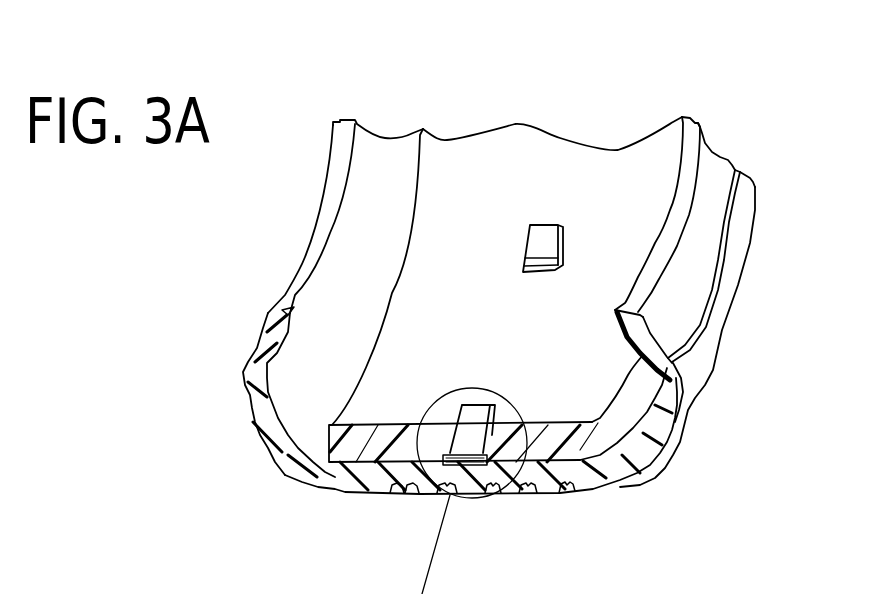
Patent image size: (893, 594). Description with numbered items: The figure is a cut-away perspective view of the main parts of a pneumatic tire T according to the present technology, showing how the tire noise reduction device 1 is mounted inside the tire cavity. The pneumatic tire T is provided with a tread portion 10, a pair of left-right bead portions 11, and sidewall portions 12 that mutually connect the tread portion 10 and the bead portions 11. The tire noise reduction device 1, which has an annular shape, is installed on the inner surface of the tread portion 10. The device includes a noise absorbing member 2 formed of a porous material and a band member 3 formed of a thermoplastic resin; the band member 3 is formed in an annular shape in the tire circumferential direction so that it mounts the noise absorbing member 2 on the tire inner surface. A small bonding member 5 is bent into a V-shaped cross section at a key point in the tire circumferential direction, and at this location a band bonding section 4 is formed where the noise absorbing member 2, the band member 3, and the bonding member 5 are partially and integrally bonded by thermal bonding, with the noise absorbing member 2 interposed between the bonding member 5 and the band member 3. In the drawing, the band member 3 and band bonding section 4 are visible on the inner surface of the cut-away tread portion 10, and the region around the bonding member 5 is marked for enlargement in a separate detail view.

The pneumatic tire T is at (417, 117).
The tire noise reduction device 1 is at (392, 292).
The noise absorbing member 2 is at (490, 153).
The band member 3 is at (432, 493).
The band bonding section 4 is at (473, 437).
The bonding member 5 is at (552, 232).
The tread portion 10 is at (587, 492).
The bead portions 11 is at (650, 320).
The sidewall portions 12 is at (674, 385).